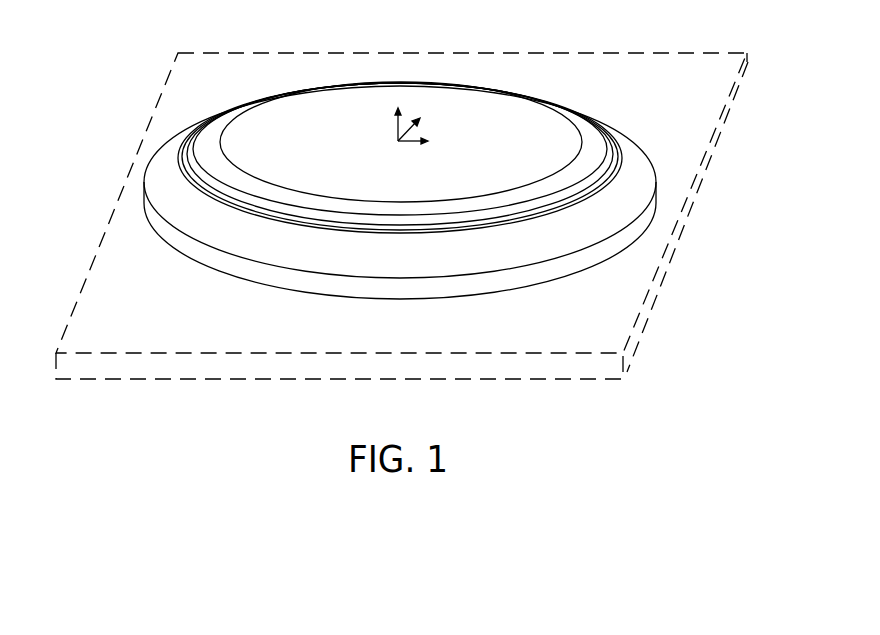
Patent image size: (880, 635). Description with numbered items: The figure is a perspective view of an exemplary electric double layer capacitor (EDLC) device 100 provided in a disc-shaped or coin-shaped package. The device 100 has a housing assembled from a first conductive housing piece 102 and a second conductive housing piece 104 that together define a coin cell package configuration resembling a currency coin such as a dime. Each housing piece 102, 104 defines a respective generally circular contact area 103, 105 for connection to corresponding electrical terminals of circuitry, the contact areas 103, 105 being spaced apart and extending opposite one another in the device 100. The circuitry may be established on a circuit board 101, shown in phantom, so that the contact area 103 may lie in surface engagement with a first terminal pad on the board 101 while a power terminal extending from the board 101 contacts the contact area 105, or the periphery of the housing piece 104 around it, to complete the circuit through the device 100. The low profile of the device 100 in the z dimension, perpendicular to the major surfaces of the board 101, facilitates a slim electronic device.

The electric double layer capacitor (EDLC) device 100 is at (557, 37).
The circuit board 101 is at (697, 82).
The first conductive housing piece 102 is at (580, 285).
The contact area 103 is at (472, 298).
The second conductive housing piece 104 is at (340, 111).
The contact area 105 is at (386, 92).